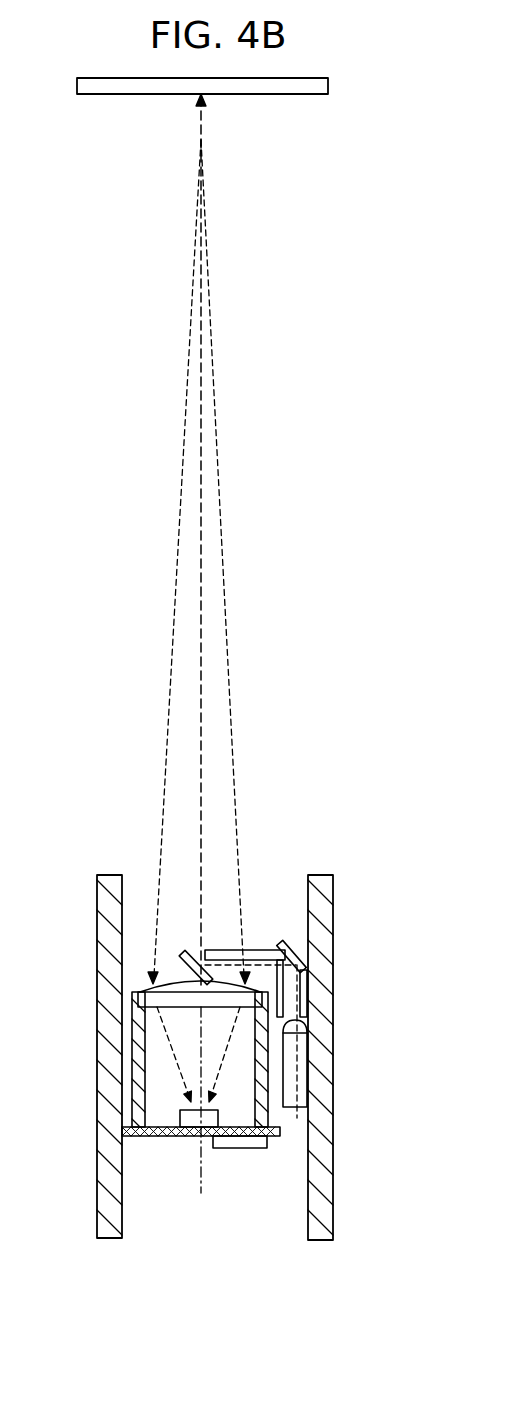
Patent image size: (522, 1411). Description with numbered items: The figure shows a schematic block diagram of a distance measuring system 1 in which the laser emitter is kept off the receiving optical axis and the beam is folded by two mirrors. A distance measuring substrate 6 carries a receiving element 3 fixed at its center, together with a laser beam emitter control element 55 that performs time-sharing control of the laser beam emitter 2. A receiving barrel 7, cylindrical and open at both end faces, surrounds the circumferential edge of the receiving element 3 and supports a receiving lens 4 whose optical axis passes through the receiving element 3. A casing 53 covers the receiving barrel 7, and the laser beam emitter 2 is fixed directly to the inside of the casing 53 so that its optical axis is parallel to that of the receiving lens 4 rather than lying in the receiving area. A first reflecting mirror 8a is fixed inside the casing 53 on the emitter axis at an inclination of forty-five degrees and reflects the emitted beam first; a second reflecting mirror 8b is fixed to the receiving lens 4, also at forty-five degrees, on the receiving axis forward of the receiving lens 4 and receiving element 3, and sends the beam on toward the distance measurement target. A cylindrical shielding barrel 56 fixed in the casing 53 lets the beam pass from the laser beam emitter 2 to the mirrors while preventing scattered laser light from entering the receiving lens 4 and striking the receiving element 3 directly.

The distance measuring system 1 is at (96, 853).
The laser beam emitter 2 is at (298, 1068).
The receiving element 3 is at (192, 1118).
The receiving lens 4 is at (138, 1002).
The distance measuring substrate 6 is at (138, 1137).
The receiving barrel 7 is at (137, 1092).
The first reflecting mirror 8a is at (303, 946).
The second reflecting mirror 8b is at (150, 963).
The casing 53 is at (318, 1233).
The laser beam emitter control element 55 is at (237, 1148).
The cylindrical shielding barrel 56 is at (257, 950).